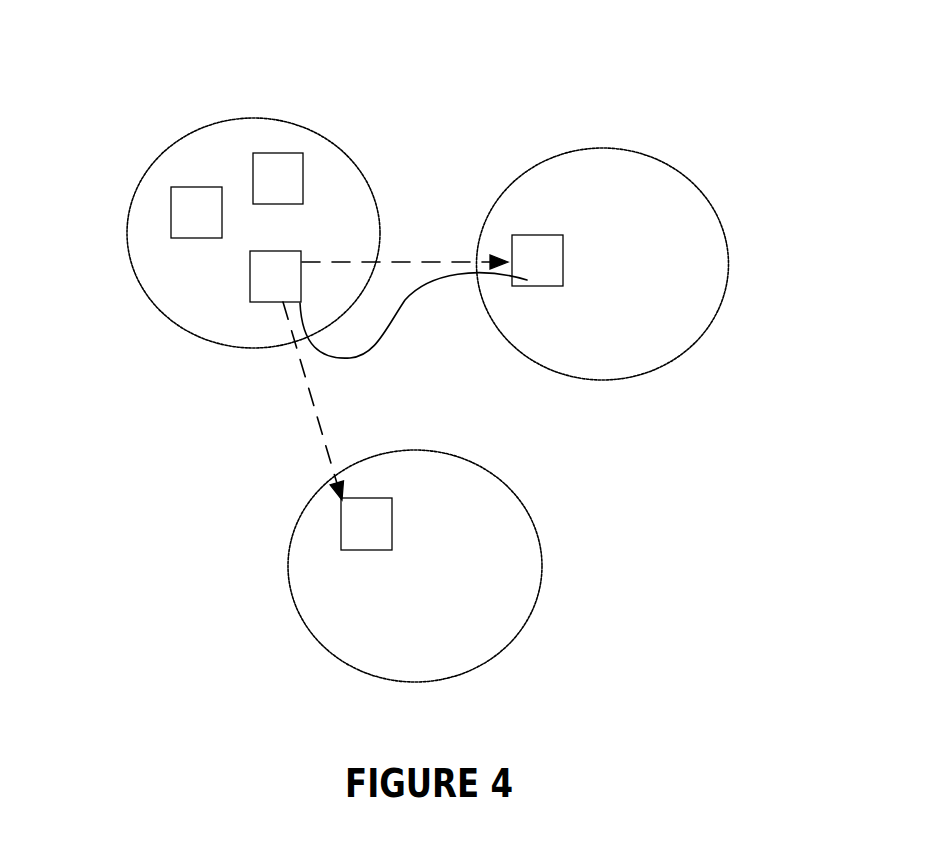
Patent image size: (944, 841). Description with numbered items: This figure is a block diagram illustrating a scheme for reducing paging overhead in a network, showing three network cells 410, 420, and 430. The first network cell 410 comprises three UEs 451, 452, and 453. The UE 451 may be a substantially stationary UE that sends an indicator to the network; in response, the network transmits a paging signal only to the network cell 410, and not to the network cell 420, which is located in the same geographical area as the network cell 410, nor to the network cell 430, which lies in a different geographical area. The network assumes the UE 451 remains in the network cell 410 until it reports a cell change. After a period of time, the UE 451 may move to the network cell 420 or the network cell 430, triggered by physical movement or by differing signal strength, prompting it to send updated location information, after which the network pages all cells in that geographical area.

The network cell 410 is at (168, 150).
The network cell 420 is at (488, 210).
The network cell 430 is at (293, 525).
The UE 451 is at (393, 498).
The UE 452 is at (284, 151).
The UE 453 is at (172, 223).